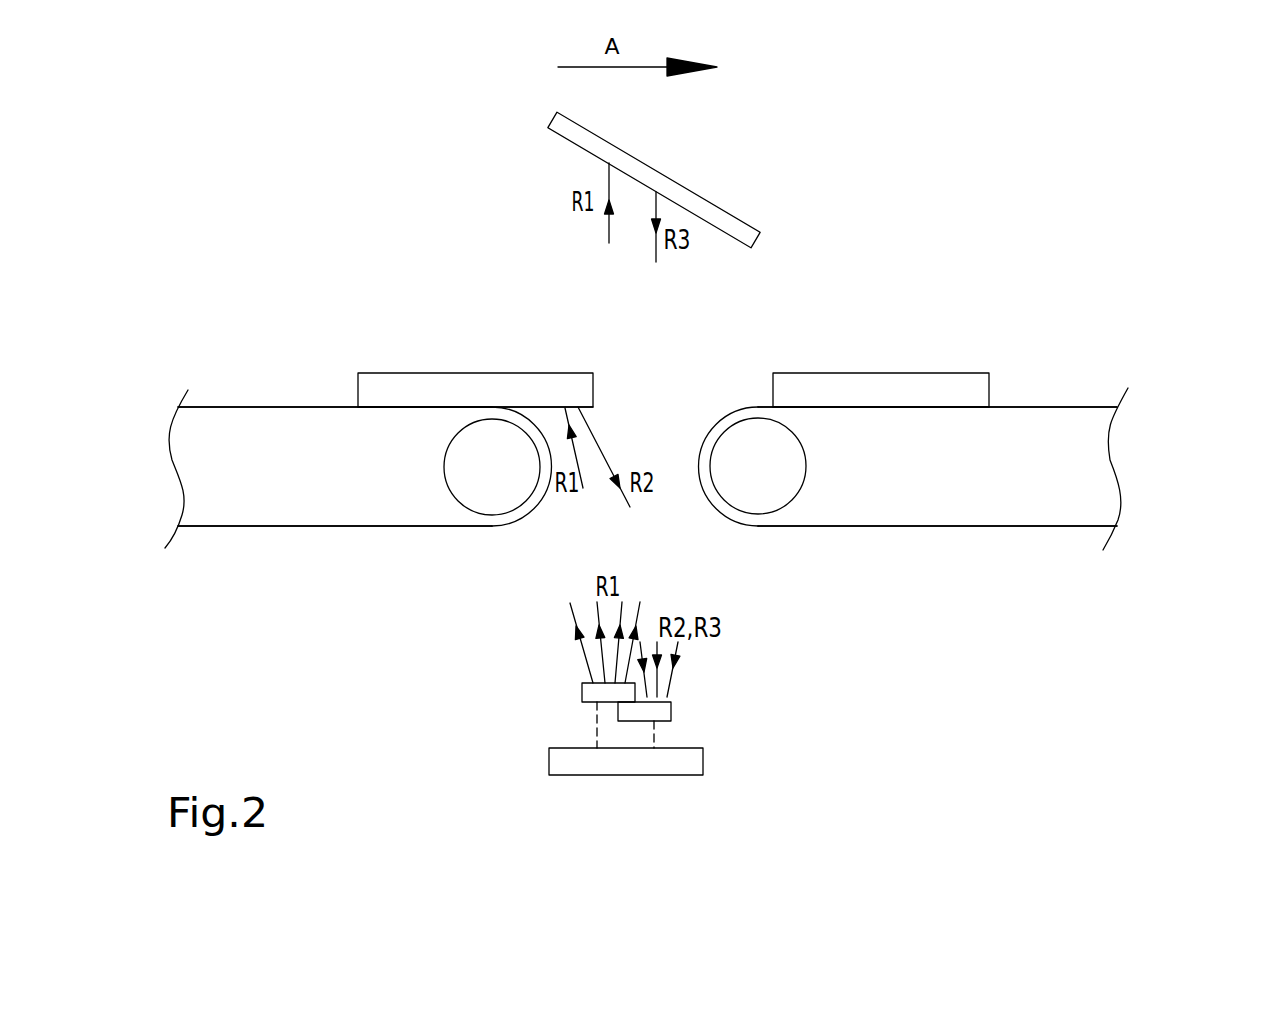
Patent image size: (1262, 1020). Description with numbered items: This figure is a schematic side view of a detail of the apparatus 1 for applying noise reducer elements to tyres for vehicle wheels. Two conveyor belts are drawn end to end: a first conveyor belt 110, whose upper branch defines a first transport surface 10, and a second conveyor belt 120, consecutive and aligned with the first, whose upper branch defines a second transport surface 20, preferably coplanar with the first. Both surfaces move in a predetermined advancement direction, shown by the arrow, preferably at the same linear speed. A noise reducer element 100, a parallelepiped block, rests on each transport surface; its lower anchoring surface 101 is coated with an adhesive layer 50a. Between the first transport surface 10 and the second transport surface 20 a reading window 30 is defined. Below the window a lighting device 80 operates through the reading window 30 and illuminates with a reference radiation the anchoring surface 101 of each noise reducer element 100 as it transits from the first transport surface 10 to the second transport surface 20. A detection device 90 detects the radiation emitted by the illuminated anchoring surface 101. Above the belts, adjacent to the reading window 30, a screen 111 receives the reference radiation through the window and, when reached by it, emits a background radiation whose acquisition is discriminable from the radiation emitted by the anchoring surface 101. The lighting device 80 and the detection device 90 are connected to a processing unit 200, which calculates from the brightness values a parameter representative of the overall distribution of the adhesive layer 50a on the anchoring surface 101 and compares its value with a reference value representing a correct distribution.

The apparatus 1 is at (1122, 186).
The first transport surface 10 is at (275, 407).
The second transport surface 20 is at (1060, 407).
The reading window 30 is at (578, 526).
The adhesive layer 50a is at (545, 408).
The lighting device 80 is at (582, 693).
The detection device 90 is at (671, 713).
The noise reducer element 100 is at (452, 360).
The anchoring surface 101 is at (592, 410).
The first conveyor belt 110 is at (365, 502).
The screen 111 is at (670, 178).
The second conveyor belt 120 is at (923, 483).
The processing unit 200 is at (630, 775).